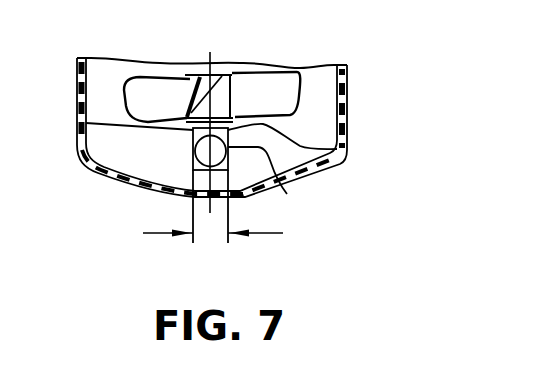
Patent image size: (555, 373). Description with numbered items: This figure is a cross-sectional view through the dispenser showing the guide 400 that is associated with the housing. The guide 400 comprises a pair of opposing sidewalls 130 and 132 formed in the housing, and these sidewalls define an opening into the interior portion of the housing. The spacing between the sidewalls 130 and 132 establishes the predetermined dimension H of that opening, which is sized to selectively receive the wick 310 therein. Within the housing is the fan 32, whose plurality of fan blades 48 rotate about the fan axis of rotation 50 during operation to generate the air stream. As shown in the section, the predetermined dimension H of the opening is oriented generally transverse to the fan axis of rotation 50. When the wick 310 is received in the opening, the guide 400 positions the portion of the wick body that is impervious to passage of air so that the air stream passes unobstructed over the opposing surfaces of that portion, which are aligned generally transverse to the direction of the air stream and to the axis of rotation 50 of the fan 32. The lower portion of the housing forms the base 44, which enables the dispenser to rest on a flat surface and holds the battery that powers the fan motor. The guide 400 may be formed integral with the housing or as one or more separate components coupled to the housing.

The guide 400 is at (446, 106).
The base 44 is at (137, 183).
The fan blades 48 is at (163, 93).
The fan 32 is at (272, 72).
The sidewall 130 is at (77, 125).
The sidewall 132 is at (337, 148).
The wick 310 is at (283, 187).
The fan axis of rotation 50 is at (210, 213).
The predetermined dimension H is at (223, 238).